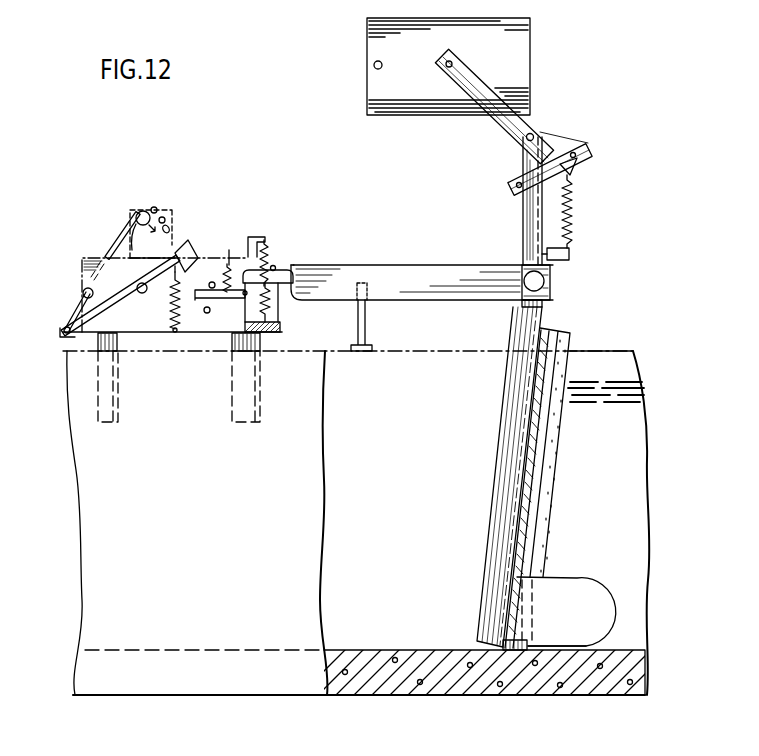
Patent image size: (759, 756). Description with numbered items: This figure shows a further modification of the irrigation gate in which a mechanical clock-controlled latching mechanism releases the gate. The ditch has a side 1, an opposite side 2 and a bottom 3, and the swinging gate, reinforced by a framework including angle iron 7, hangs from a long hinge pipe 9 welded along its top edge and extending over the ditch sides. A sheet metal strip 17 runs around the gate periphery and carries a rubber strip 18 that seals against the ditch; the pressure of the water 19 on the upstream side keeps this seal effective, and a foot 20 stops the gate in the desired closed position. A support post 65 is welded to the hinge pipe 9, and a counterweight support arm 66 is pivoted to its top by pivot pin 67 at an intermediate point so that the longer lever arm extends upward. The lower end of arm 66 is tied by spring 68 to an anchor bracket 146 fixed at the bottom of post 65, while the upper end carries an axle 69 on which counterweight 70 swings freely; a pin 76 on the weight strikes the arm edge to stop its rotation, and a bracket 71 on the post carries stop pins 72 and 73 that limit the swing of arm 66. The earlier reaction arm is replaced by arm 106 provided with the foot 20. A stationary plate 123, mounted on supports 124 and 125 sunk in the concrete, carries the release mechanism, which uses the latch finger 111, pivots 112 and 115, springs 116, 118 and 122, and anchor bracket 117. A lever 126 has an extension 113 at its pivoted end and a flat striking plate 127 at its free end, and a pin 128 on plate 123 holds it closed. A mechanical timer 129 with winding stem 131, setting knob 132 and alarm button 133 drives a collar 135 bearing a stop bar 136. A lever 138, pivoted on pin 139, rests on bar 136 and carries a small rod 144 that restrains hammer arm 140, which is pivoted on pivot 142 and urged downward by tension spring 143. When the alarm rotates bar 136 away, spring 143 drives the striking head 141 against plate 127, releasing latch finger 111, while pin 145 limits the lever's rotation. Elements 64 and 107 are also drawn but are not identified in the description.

The side of irrigation ditch 1 is at (326, 592).
The side of irrigation ditch 2 is at (586, 351).
The bottom of irrigation ditch 3 is at (420, 650).
The angle iron 7 is at (484, 576).
The pipe 9 is at (552, 284).
The sheet metal strip 17 is at (537, 549).
The rubber strip 18 is at (546, 566).
The water 19 is at (630, 496).
The foot 20 is at (367, 326).
The bucket end 64 is at (608, 636).
The support post 65 is at (523, 231).
The counterweight support arm 66 is at (500, 100).
The pivot pin 67 is at (526, 138).
The spring 68 is at (570, 207).
The axle 69 is at (453, 62).
The counterweight 70 is at (530, 70).
The bracket 71 is at (592, 152).
The stop pin 72 is at (580, 160).
The stop pin 73 is at (510, 190).
The pin 76 is at (375, 66).
The arm 106 is at (380, 272).
The plate end 107 is at (296, 270).
The latch finger 111 is at (287, 270).
The pivot 112 is at (275, 266).
The extension 113 is at (240, 289).
The pivot 115 is at (280, 330).
The spring 116 is at (266, 244).
The anchor bracket 117 is at (254, 237).
The spring 118 is at (272, 297).
The spring 122 is at (226, 263).
The stationary plate 123 is at (84, 274).
The support 124 is at (120, 430).
The support 125 is at (246, 430).
The lever 126 is at (218, 300).
The flat plate 127 is at (189, 276).
The pin 128 is at (209, 286).
The mechanical timer 129 is at (130, 208).
The winding stem 131 is at (169, 226).
The setting knob 132 is at (165, 217).
The alarm on-off button 133 is at (155, 207).
The collar 135 is at (134, 230).
The stop bar 136 is at (133, 212).
The lever 138 is at (112, 250).
The pin 139 is at (83, 294).
The hammer arm 140 is at (138, 304).
The striking head 141 is at (190, 240).
The pivot 142 is at (146, 293).
The tension spring 143 is at (170, 312).
The small rod 144 is at (64, 329).
The pin 145 is at (206, 313).
The anchor bracket 146 is at (569, 256).